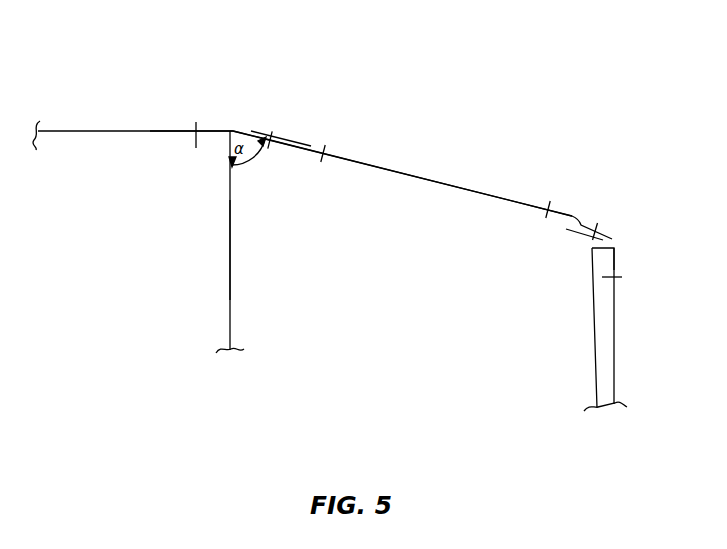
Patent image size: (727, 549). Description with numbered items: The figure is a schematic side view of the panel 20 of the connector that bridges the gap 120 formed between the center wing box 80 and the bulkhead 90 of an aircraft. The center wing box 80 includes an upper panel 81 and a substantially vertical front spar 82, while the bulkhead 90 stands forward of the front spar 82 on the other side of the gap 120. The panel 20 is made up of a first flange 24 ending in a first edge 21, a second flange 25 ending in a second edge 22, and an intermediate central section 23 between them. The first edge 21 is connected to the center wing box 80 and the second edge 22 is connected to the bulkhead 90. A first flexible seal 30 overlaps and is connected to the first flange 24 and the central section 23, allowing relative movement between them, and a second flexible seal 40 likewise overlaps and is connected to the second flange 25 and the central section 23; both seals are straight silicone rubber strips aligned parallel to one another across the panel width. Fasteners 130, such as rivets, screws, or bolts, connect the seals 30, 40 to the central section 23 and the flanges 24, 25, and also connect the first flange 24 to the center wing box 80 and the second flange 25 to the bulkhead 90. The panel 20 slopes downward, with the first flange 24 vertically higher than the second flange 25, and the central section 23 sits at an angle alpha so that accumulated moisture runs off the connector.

The panel 20 is at (425, 100).
The first edge 21 is at (186, 129).
The second edge 22 is at (617, 296).
The central section 23 is at (425, 179).
The first flange 24 is at (219, 129).
The second flange 25 is at (618, 257).
The first flexible seal 30 is at (298, 140).
The second flexible seal 40 is at (592, 232).
The center wing box 80 is at (143, 255).
The upper panel 81 is at (82, 137).
The front spar 82 is at (230, 303).
The bulkhead 90 is at (617, 378).
The gap 120 is at (415, 312).
The fasteners 130 is at (195, 142).